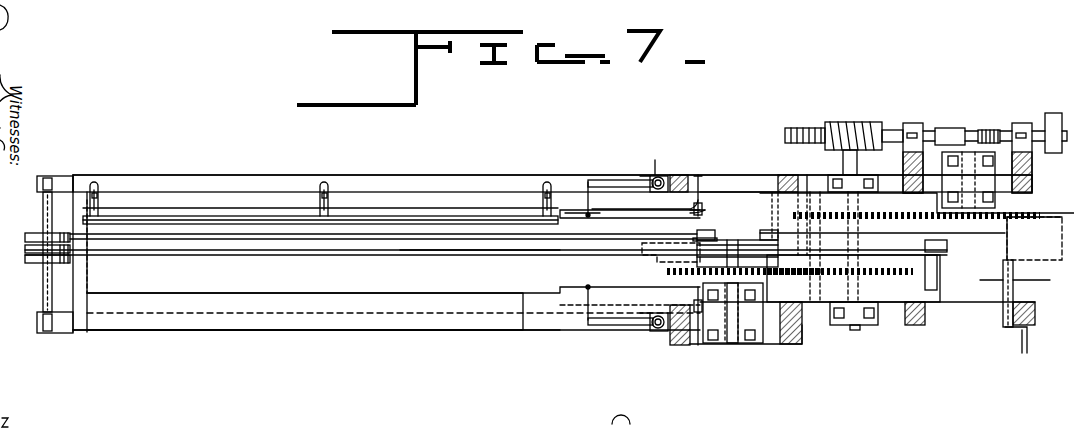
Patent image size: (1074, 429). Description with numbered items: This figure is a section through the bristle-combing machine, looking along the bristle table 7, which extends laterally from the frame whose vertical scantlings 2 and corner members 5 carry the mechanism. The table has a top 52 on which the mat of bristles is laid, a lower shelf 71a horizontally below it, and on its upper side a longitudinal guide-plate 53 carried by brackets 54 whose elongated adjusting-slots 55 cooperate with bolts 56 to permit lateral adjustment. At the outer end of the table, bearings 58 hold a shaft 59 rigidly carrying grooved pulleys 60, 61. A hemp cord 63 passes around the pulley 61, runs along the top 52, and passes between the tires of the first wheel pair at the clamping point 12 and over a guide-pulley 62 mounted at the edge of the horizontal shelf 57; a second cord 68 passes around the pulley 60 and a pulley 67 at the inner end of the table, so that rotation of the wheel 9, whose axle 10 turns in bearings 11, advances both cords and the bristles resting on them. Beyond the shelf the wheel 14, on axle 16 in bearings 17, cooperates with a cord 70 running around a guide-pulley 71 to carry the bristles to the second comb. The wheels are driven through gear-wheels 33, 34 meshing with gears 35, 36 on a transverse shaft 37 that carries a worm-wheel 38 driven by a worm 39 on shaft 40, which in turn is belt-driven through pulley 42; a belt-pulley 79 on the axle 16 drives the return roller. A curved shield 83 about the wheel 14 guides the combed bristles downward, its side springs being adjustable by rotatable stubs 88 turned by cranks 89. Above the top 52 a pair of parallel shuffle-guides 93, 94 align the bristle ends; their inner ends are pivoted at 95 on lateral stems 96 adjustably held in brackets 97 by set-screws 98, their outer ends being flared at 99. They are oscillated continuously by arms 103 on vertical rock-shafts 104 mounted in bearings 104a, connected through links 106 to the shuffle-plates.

The vertical members or scantlings 2 is at (790, 175).
The corner members 5 is at (678, 176).
The table 7 is at (380, 175).
The wheel 9 is at (745, 240).
The axle 10 is at (735, 345).
The bearings 11 is at (755, 300).
The point 12 is at (1016, 279).
The wheel 14 is at (950, 240).
The axle 16 is at (985, 130).
The bearings 17 is at (950, 175).
The gear-wheel 33 is at (665, 268).
The gear-wheel 34 is at (1035, 215).
The gear 35 is at (888, 280).
The gear 36 is at (847, 246).
The transversely-disposed shaft 37 is at (845, 157).
The worm-wheel 38 is at (797, 128).
The worm 39 is at (845, 122).
The shaft 40 is at (893, 130).
The pulley 42 is at (1053, 113).
The top 52 is at (265, 290).
The guide-plate 53 is at (250, 210).
The brackets 54 is at (100, 182).
The elongated adjusting-slots 55 is at (100, 207).
The bolts 56 is at (100, 196).
The horizontal shelf 57 is at (888, 326).
The bearings 58 is at (55, 178).
The shaft 59 is at (45, 288).
The grooved pulley 60 is at (38, 233).
The grooved pulley 61 is at (30, 263).
The guide-pulley 62 is at (937, 280).
The cord 63 is at (434, 256).
The pulley 67 is at (712, 230).
The cord 68 is at (333, 242).
The cord 70 is at (822, 195).
The guide-pulley 71 is at (752, 200).
The lower shelf 71a is at (185, 332).
The belt-pulley 79 is at (948, 128).
The shield or guide 83 is at (1040, 262).
The stubs 88 is at (1003, 285).
The cranks 89 is at (1022, 353).
The shuffle-guide 93 is at (600, 338).
The shuffle-guide 94 is at (655, 215).
The pivot 95 is at (695, 215).
The stems 96 is at (702, 175).
The brackets 97 is at (700, 175).
The set-screws 98 is at (704, 188).
The flared extremities 99 is at (585, 218).
The arms 103 is at (648, 178).
The rock-shafts 104 is at (660, 178).
The bearings 104a is at (656, 175).
The links 106 is at (595, 205).